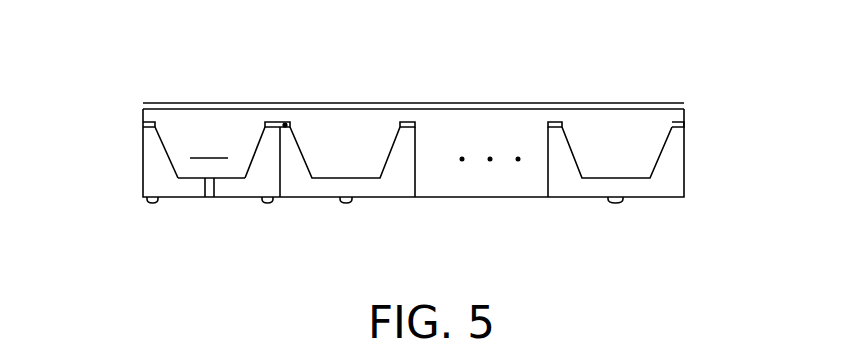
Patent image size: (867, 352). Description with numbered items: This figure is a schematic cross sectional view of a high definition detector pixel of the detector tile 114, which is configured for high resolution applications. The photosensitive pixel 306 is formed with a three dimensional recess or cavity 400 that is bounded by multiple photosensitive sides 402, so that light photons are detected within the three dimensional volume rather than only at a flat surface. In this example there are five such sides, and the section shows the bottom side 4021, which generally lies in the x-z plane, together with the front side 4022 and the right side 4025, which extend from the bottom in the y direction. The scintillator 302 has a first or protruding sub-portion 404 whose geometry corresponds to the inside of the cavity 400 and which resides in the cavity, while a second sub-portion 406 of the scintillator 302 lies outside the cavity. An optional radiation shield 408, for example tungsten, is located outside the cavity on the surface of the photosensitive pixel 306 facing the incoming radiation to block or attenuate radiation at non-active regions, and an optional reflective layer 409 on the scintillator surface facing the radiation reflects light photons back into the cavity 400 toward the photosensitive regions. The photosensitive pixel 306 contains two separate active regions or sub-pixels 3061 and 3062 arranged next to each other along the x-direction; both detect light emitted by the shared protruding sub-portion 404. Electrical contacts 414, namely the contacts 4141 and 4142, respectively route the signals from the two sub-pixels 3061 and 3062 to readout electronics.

The detector tile 114 is at (416, 147).
The scintillator 302 is at (407, 109).
The photosensitive pixel 306 is at (165, 207).
The sub-pixel 3061 is at (199, 197).
The sub-pixel 3062 is at (242, 232).
The cavity 400 is at (368, 150).
The photosensitive sides 402 is at (362, 150).
The bottom side 4021 is at (180, 179).
The front side 4022 is at (168, 169).
The right side 4025 is at (248, 155).
The protruding sub-portion 404 is at (173, 129).
The second sub-portion 406 is at (146, 114).
The radiation shield 408 is at (143, 124).
The reflective layer 409 is at (197, 103).
The electrical contacts 414 is at (337, 232).
The electrical contact 4141 is at (150, 200).
The electrical contact 4142 is at (288, 232).